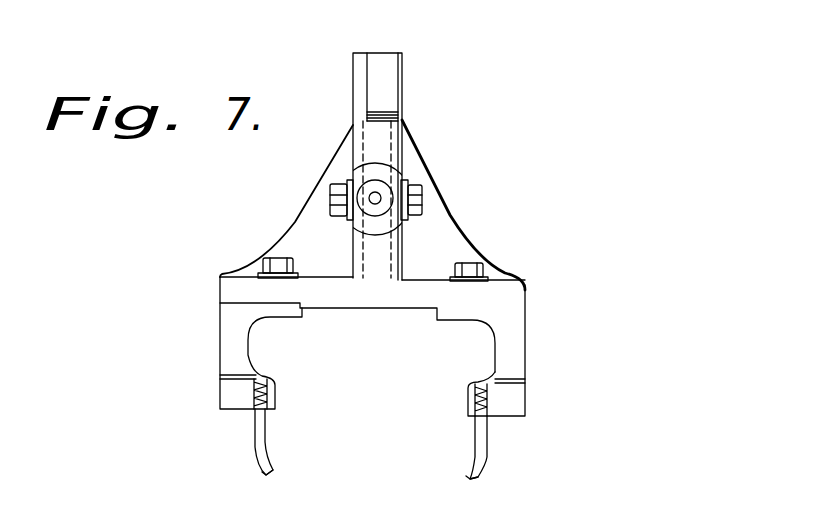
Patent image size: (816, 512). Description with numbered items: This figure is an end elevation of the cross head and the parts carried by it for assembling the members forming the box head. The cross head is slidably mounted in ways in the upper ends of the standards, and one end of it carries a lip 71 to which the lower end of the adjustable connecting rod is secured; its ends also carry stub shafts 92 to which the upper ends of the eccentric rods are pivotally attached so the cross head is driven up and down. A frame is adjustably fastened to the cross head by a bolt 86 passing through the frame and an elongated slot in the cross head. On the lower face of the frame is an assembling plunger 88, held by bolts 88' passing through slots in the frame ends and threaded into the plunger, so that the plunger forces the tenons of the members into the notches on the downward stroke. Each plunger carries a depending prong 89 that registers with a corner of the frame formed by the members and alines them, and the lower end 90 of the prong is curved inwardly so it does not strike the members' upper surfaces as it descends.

The lip 71 is at (378, 72).
The stub shaft 92 is at (377, 186).
The bolt 86 is at (419, 198).
The assembling plunger 88 is at (407, 268).
The bolt 88' is at (374, 245).
The depending prong 89 is at (257, 432).
The lower end of prong 90 is at (275, 475).